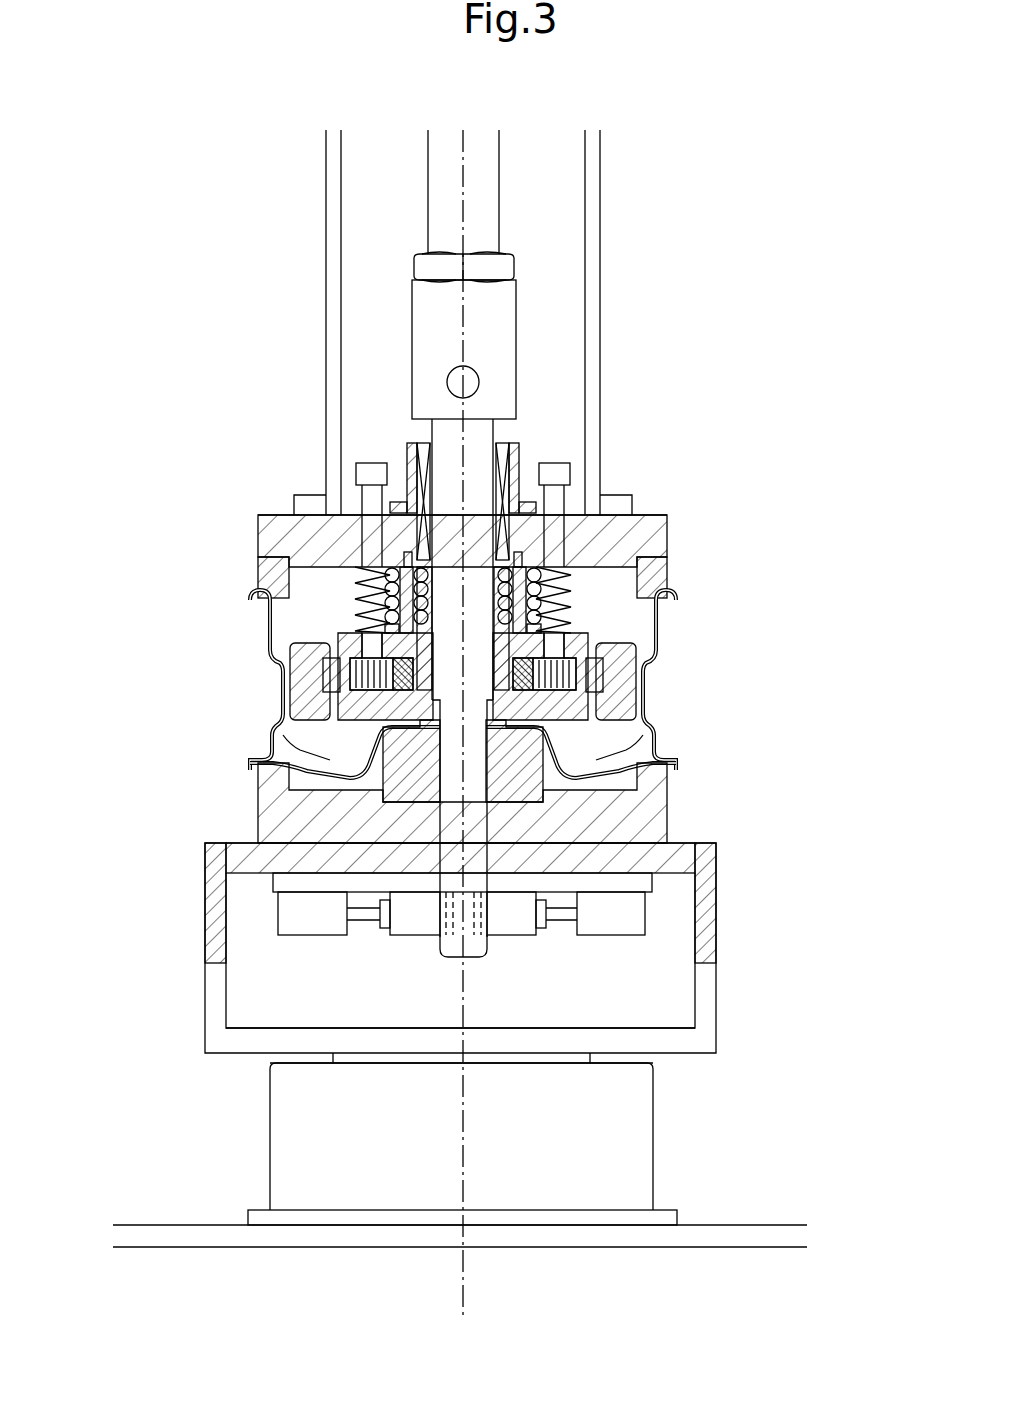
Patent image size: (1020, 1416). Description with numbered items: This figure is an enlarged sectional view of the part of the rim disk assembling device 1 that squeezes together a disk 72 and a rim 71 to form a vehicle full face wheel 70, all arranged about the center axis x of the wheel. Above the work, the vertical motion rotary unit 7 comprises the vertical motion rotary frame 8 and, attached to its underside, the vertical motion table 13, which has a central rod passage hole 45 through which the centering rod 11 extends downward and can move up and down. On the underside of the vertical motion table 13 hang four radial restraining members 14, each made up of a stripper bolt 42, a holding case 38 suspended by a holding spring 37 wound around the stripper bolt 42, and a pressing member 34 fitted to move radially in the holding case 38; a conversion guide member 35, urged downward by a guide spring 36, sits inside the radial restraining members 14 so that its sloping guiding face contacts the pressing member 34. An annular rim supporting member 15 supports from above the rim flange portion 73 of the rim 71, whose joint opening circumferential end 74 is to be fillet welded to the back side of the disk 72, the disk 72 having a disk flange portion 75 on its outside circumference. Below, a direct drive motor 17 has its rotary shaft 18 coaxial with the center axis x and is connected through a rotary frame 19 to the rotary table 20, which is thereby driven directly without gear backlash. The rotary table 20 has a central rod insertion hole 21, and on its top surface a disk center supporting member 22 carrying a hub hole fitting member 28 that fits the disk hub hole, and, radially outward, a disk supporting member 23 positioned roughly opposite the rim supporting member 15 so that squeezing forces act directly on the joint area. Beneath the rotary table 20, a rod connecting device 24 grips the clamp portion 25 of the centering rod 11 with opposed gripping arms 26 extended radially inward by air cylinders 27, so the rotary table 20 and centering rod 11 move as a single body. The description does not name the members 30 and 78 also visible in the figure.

The rim disk assembling device 1 is at (752, 148).
The center axis x is at (463, 208).
The vertical motion rotary unit 7 is at (612, 470).
The vertical motion rotary frame 8 is at (592, 235).
The centering rod 11 is at (475, 820).
The vertical motion table 13 is at (660, 516).
The radial restraining member 14 is at (312, 628).
The rim supporting member 15 is at (666, 572).
The direct drive motor 17 is at (618, 1158).
The rotary shaft 18 is at (575, 1058).
The rotary frame 19 is at (707, 928).
The rotary table 20 is at (280, 866).
The rod insertion hole 21 is at (490, 876).
The disk center supporting member 22 is at (518, 763).
The disk supporting member 23 is at (668, 797).
The rod connecting device 24 is at (310, 945).
The clamp portion 25 is at (457, 928).
The gripping arms 26 is at (413, 925).
The air cylinders 27 is at (293, 917).
The hub hole fitting member 28 is at (365, 737).
The clamp block 30 is at (290, 676).
The pressing member 34 is at (603, 672).
The conversion guide member 35 is at (360, 627).
The guide spring 36 is at (380, 566).
The holding spring 37 is at (570, 592).
The holding case 38 is at (600, 700).
The stripper bolt 42 is at (570, 470).
The rod passage hole 45 is at (407, 502).
The full face wheel 70 is at (272, 727).
The rim 71 is at (280, 608).
The disk 72 is at (255, 763).
The rim flange portion 73 is at (678, 592).
The joint opening circumferential end 74 is at (632, 768).
The disk flange portion 75 is at (665, 765).
The bearing 78 is at (323, 682).